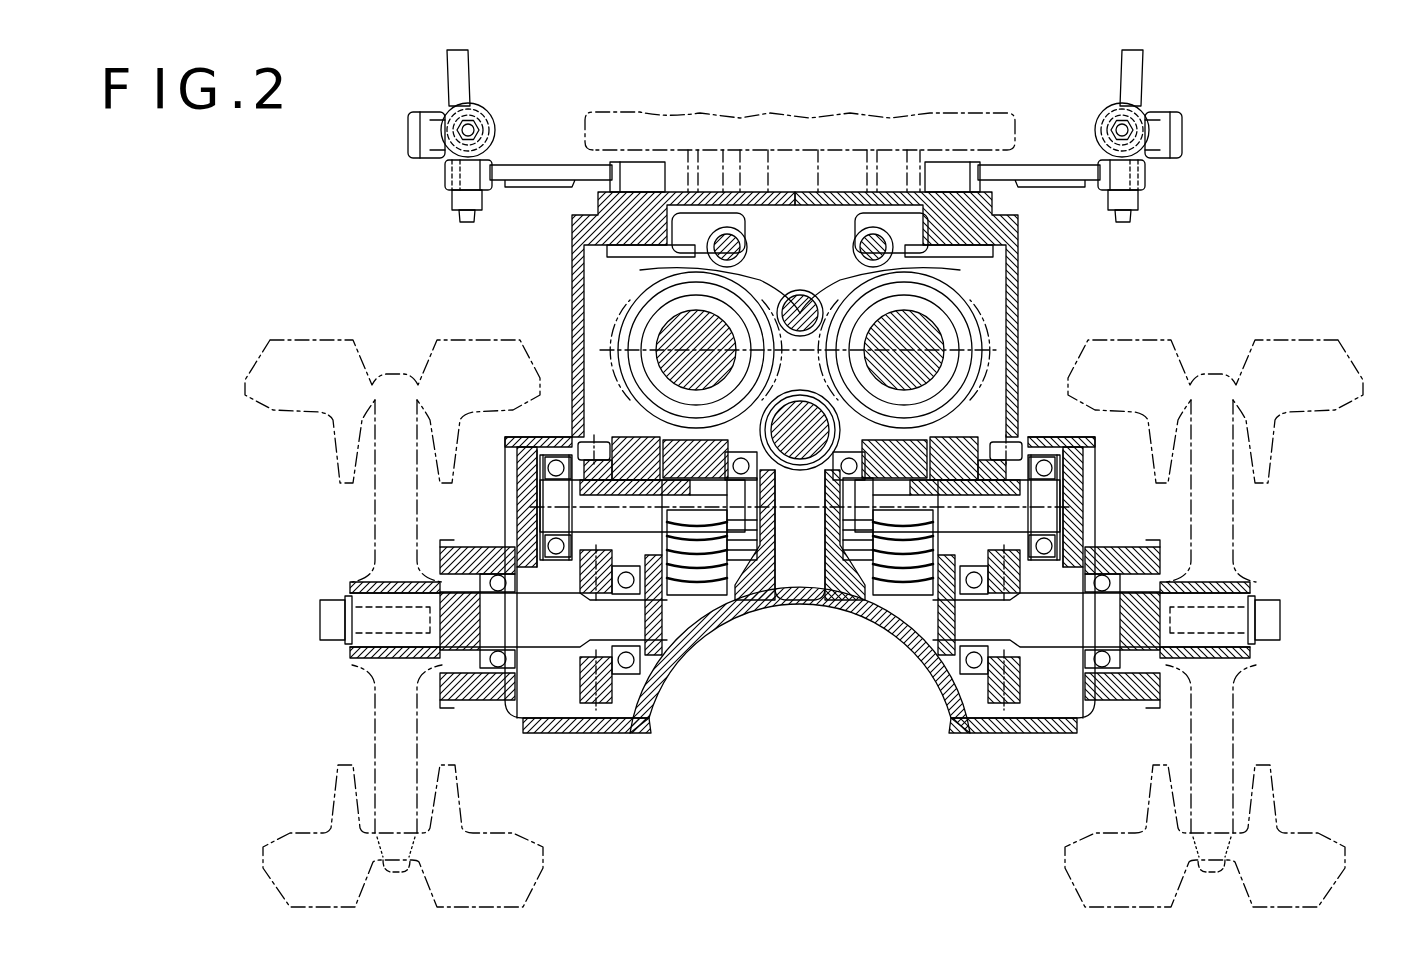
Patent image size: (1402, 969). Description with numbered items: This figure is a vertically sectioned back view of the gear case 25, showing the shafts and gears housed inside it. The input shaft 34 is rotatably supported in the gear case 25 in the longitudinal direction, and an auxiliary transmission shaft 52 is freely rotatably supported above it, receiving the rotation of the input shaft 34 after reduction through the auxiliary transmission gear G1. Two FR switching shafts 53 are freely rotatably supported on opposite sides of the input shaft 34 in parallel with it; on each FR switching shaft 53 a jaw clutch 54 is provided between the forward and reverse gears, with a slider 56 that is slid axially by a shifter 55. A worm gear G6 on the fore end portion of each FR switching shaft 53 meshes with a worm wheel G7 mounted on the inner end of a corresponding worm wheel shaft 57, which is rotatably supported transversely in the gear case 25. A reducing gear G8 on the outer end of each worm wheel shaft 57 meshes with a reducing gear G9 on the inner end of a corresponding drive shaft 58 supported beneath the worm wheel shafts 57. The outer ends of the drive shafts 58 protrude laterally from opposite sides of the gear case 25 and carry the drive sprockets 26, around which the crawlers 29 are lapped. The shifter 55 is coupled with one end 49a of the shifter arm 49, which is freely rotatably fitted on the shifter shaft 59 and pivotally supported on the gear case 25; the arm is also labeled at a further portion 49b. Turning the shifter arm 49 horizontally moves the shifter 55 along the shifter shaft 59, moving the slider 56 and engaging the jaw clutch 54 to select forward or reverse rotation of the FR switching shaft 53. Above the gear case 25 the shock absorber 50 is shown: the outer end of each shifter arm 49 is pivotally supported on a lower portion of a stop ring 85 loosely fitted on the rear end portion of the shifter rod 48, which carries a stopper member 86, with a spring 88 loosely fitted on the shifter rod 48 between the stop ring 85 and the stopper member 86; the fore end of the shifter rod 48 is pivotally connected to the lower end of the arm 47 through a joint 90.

The gear case 25 is at (968, 716).
The drive sprocket 26 is at (1233, 527).
The crawler 29 is at (1262, 338).
The input shaft 34 is at (797, 478).
The arm 47 is at (1135, 88).
The shifter rod 48 is at (1128, 108).
The shifter arm 49 is at (959, 148).
The one end of shifter arm 49a is at (914, 150).
The bracket plate 49b is at (1022, 165).
The shock absorber 50 is at (1112, 110).
The auxiliary transmission shaft 52 is at (818, 150).
The FR switching shaft 53 is at (955, 342).
The jaw clutch 54 is at (966, 271).
The shifter 55 is at (955, 292).
The slider 56 is at (945, 315).
The worm wheel shaft 57 is at (962, 480).
The drive shaft 58 is at (1115, 645).
The shifter shaft 59 is at (867, 150).
The stop ring 85 is at (1098, 162).
The stopper member 86 is at (1100, 118).
The spring 88 is at (1150, 142).
The joint 90 is at (1183, 138).
The auxiliary transmission gear G1 is at (768, 150).
The worm gear G6 is at (960, 385).
The worm wheel G7 is at (895, 600).
The reducing gear G8 is at (1004, 440).
The reducing gear G9 is at (1008, 712).